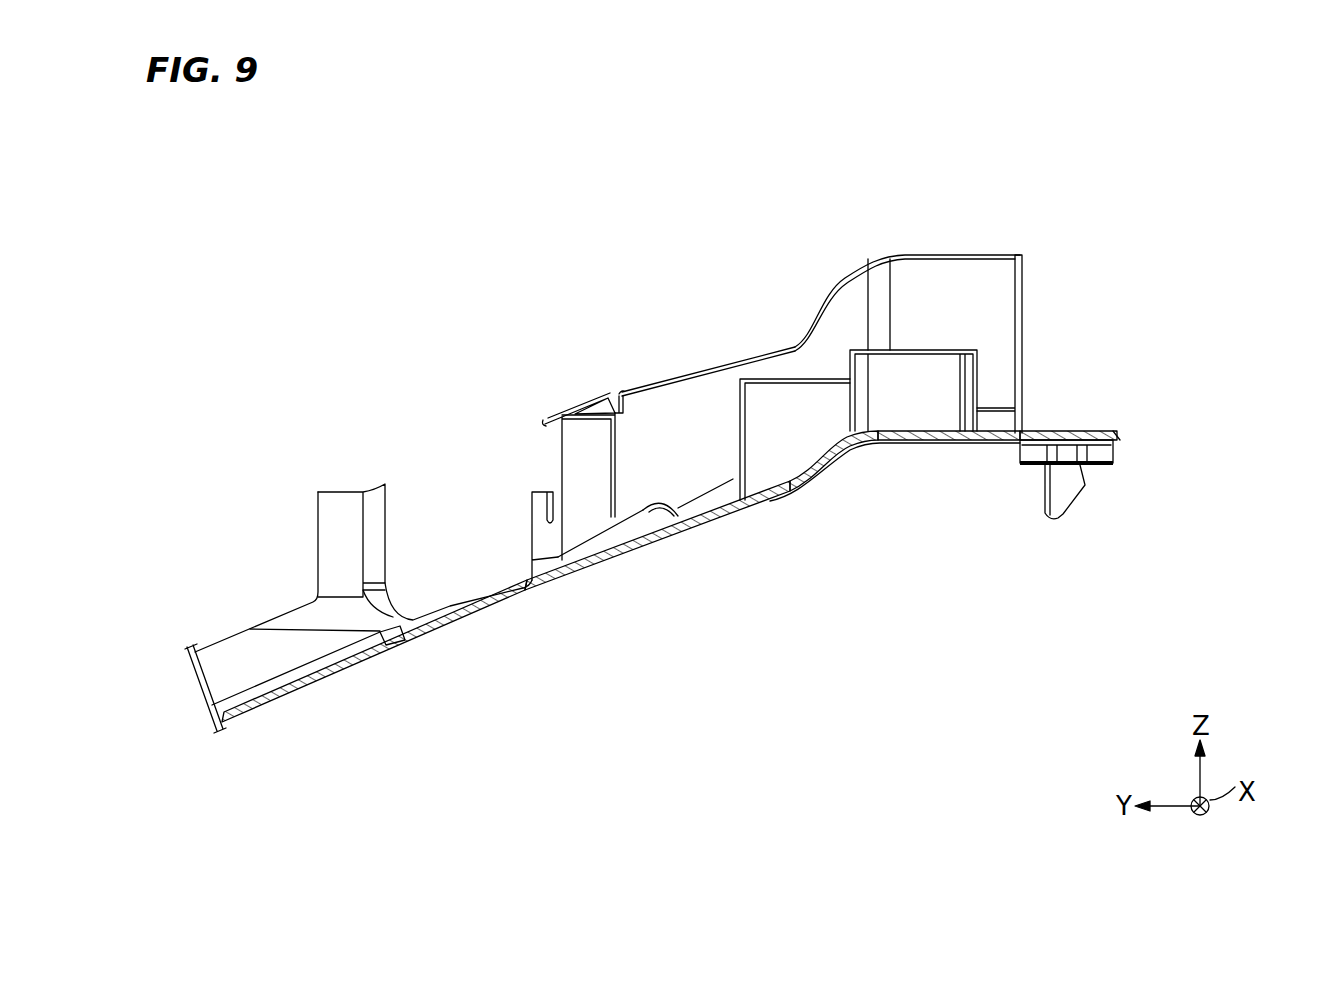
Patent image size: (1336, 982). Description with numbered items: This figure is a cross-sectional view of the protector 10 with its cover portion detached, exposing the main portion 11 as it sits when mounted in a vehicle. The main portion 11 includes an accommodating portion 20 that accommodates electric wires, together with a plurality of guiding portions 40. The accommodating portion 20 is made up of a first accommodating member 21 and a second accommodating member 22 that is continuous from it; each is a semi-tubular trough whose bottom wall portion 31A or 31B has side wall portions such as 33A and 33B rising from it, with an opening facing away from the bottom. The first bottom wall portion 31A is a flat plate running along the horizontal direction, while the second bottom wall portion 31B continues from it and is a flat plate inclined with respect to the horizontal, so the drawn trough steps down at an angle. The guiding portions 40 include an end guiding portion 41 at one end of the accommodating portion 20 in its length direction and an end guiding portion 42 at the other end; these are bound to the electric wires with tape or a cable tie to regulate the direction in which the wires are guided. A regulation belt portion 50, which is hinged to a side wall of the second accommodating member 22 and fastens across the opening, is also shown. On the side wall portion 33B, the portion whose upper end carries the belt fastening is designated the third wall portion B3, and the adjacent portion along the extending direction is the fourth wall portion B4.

The protector 10 is at (721, 485).
The main portion 11 is at (721, 485).
The accommodating portion 20 is at (687, 603).
The first accommodating member 21 is at (957, 272).
The second accommodating member 22 is at (690, 378).
The first bottom wall portion 31A is at (968, 442).
The second bottom wall portion 31B is at (703, 528).
The side wall portion 33A is at (1000, 262).
The side wall portion 33B is at (664, 400).
The guiding portions 40 is at (687, 603).
The end guiding portion 41 is at (1113, 464).
The end guiding portion 42 is at (262, 705).
The regulation belt portion 50 is at (555, 420).
The third wall portion B3 is at (586, 435).
The fourth wall portion B4 is at (624, 395).